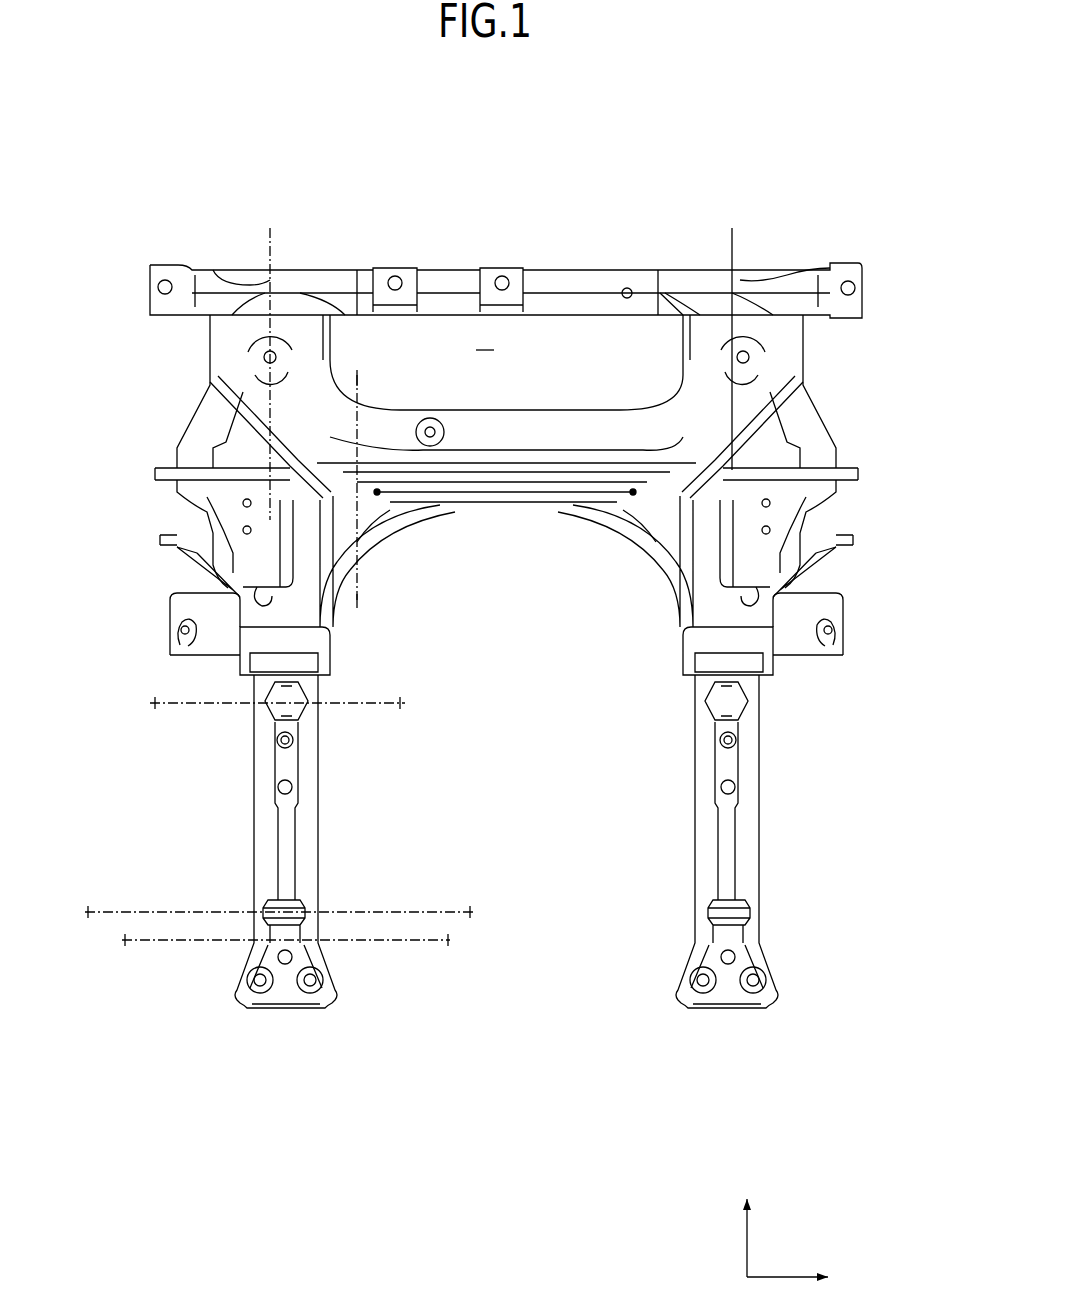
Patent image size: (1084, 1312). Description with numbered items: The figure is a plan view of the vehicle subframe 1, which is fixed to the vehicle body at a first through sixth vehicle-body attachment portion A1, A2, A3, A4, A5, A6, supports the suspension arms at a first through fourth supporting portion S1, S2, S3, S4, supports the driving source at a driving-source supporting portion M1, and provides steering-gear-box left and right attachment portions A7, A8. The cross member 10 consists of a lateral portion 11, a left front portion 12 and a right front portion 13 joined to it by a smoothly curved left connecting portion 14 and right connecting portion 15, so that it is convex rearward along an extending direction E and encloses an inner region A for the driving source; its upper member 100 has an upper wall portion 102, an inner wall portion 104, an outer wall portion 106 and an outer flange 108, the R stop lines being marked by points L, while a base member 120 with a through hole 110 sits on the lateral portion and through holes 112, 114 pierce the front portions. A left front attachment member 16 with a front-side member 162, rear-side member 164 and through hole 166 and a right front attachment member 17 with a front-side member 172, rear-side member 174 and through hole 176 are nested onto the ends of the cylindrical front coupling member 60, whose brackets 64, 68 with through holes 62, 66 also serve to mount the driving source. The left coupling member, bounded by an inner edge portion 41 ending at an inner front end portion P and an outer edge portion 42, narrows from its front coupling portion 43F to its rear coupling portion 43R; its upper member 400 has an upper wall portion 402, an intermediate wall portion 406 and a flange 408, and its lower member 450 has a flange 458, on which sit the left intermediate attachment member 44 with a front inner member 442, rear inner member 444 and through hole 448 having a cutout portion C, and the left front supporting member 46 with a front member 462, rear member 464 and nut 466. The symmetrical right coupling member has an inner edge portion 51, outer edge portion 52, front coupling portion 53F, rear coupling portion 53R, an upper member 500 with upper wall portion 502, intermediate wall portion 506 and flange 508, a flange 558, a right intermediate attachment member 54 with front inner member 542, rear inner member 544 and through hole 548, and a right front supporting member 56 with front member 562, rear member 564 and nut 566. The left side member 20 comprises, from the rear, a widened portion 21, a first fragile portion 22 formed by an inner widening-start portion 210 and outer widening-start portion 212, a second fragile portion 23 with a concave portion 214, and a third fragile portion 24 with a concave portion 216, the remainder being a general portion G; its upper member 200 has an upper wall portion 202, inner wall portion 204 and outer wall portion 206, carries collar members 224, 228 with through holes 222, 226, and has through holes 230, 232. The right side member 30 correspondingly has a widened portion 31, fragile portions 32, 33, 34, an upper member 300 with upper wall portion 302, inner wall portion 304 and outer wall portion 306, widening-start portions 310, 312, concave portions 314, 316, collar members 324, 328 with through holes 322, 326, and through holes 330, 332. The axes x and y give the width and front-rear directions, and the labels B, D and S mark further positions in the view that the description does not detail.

The subframe 1 is at (738, 125).
The cross member 10 is at (570, 395).
The lateral portion 11 is at (520, 395).
The left front portion 12 is at (345, 366).
The right front portion 13 is at (683, 331).
The left connecting portion 14 is at (380, 401).
The right connecting portion 15 is at (655, 395).
The left front attachment member 16 is at (182, 262).
The right front attachment member 17 is at (860, 255).
The left side member 20 is at (183, 786).
The widened portion 21 is at (258, 1015).
The first fragile portion 22 is at (335, 930).
The second fragile portion 23 is at (312, 905).
The third fragile portion 24 is at (320, 698).
The right side member 30 is at (832, 790).
The widened portion 31 is at (720, 1015).
The first fragile portion 32 is at (677, 931).
The second fragile portion 33 is at (700, 905).
The third fragile portion 34 is at (693, 698).
The inner edge portion 41 is at (380, 579).
The outer edge portion 42 is at (185, 438).
The front coupling portion 43F is at (285, 416).
The rear coupling portion 43R is at (360, 656).
The left intermediate attachment member 44 is at (160, 656).
The left front supporting member 46 is at (165, 490).
The inner edge portion 51 is at (668, 577).
The outer edge portion 52 is at (830, 438).
The front coupling portion 53F is at (722, 416).
The rear coupling portion 53R is at (665, 664).
The right intermediate attachment member 54 is at (852, 650).
The right front supporting member 56 is at (832, 498).
The front coupling member 60 is at (623, 265).
The through hole 62 is at (400, 275).
The bracket 64 is at (385, 265).
The through hole 66 is at (507, 275).
The bracket 68 is at (490, 265).
The upper member 100 is at (555, 385).
The upper wall portion 102 is at (500, 420).
The inner wall portion 104 is at (578, 401).
The outer wall portion 106 is at (502, 526).
The outer flange 108 is at (506, 477).
The through hole 110 is at (434, 428).
The through hole 112 is at (275, 352).
The through hole 114 is at (748, 352).
The base member 120 is at (430, 418).
The front-side member 162 is at (212, 290).
The rear-side member 164 is at (316, 305).
The through hole 166 is at (158, 290).
The front-side member 172 is at (785, 285).
The rear-side member 174 is at (703, 298).
The through hole 176 is at (856, 287).
The upper member 200 is at (338, 792).
The upper wall portion 202 is at (298, 830).
The inner wall portion 204 is at (317, 880).
The outer wall portion 206 is at (255, 885).
The inner widening-start portion 210 is at (320, 941).
The outer widening-start portion 212 is at (262, 935).
The concave portion 214 is at (258, 905).
The concave portion 216 is at (262, 702).
The through hole 222 is at (324, 981).
The collar member 224 is at (327, 996).
The through hole 226 is at (247, 981).
The collar member 228 is at (277, 958).
The through hole 230 is at (280, 789).
The through hole 232 is at (293, 742).
The upper member 300 is at (672, 788).
The upper wall portion 302 is at (715, 830).
The inner wall portion 304 is at (696, 880).
The outer wall portion 306 is at (758, 885).
The inner widening-start portion 310 is at (693, 941).
The outer widening-start portion 312 is at (750, 936).
The concave portion 314 is at (755, 906).
The concave portion 316 is at (750, 702).
The through hole 322 is at (689, 981).
The collar member 324 is at (688, 996).
The through hole 326 is at (767, 981).
The collar member 328 is at (736, 958).
The through hole 330 is at (735, 789).
The through hole 332 is at (720, 742).
The upper member 400 is at (205, 420).
The upper wall portion 402 is at (424, 528).
The intermediate wall portion 406 is at (432, 551).
The flange 408 is at (395, 556).
The front inner member 442 is at (278, 651).
The rear inner member 444 is at (216, 693).
The through hole 448 is at (176, 672).
The lower member 450 is at (165, 455).
The flange 458 is at (337, 622).
The front member 462 is at (168, 505).
The rear member 464 is at (178, 542).
The nut 466 is at (200, 566).
The upper member 500 is at (820, 420).
The upper wall portion 502 is at (655, 520).
The intermediate wall portion 506 is at (650, 541).
The flange 508 is at (655, 557).
The front inner member 542 is at (735, 651).
The rear inner member 544 is at (802, 700).
The through hole 548 is at (822, 673).
The flange 558 is at (680, 624).
The front member 562 is at (838, 478).
The rear member 564 is at (830, 540).
The nut 566 is at (815, 565).
The inner region A is at (307, 600).
The first vehicle-body attachment portion A1 is at (142, 305).
The second vehicle-body attachment portion A2 is at (870, 300).
The third vehicle-body attachment portion A3 is at (165, 605).
The fourth vehicle-body attachment portion A4 is at (850, 605).
The fifth vehicle-body attachment portion A5 is at (293, 1015).
The sixth vehicle-body attachment portion A6 is at (755, 1015).
The steering-gear-box left attachment portion A7 is at (250, 365).
The steering-gear-box right attachment portion A8 is at (770, 366).
The section line B- B is at (125, 948).
The cutout portion C is at (178, 630).
The section line D- D is at (155, 712).
The extending direction E is at (272, 232).
The general portion G is at (248, 857).
The R stop portion L is at (633, 490).
The driving-source supporting portion M1 is at (446, 228).
The inner front end portion P is at (570, 507).
The space S is at (268, 845).
The first supporting portion S1 is at (170, 525).
The second supporting portion S2 is at (830, 515).
The third supporting portion S3 is at (247, 762).
The fourth supporting portion S4 is at (766, 761).
The x axis x is at (797, 1277).
The y axis y is at (746, 1225).